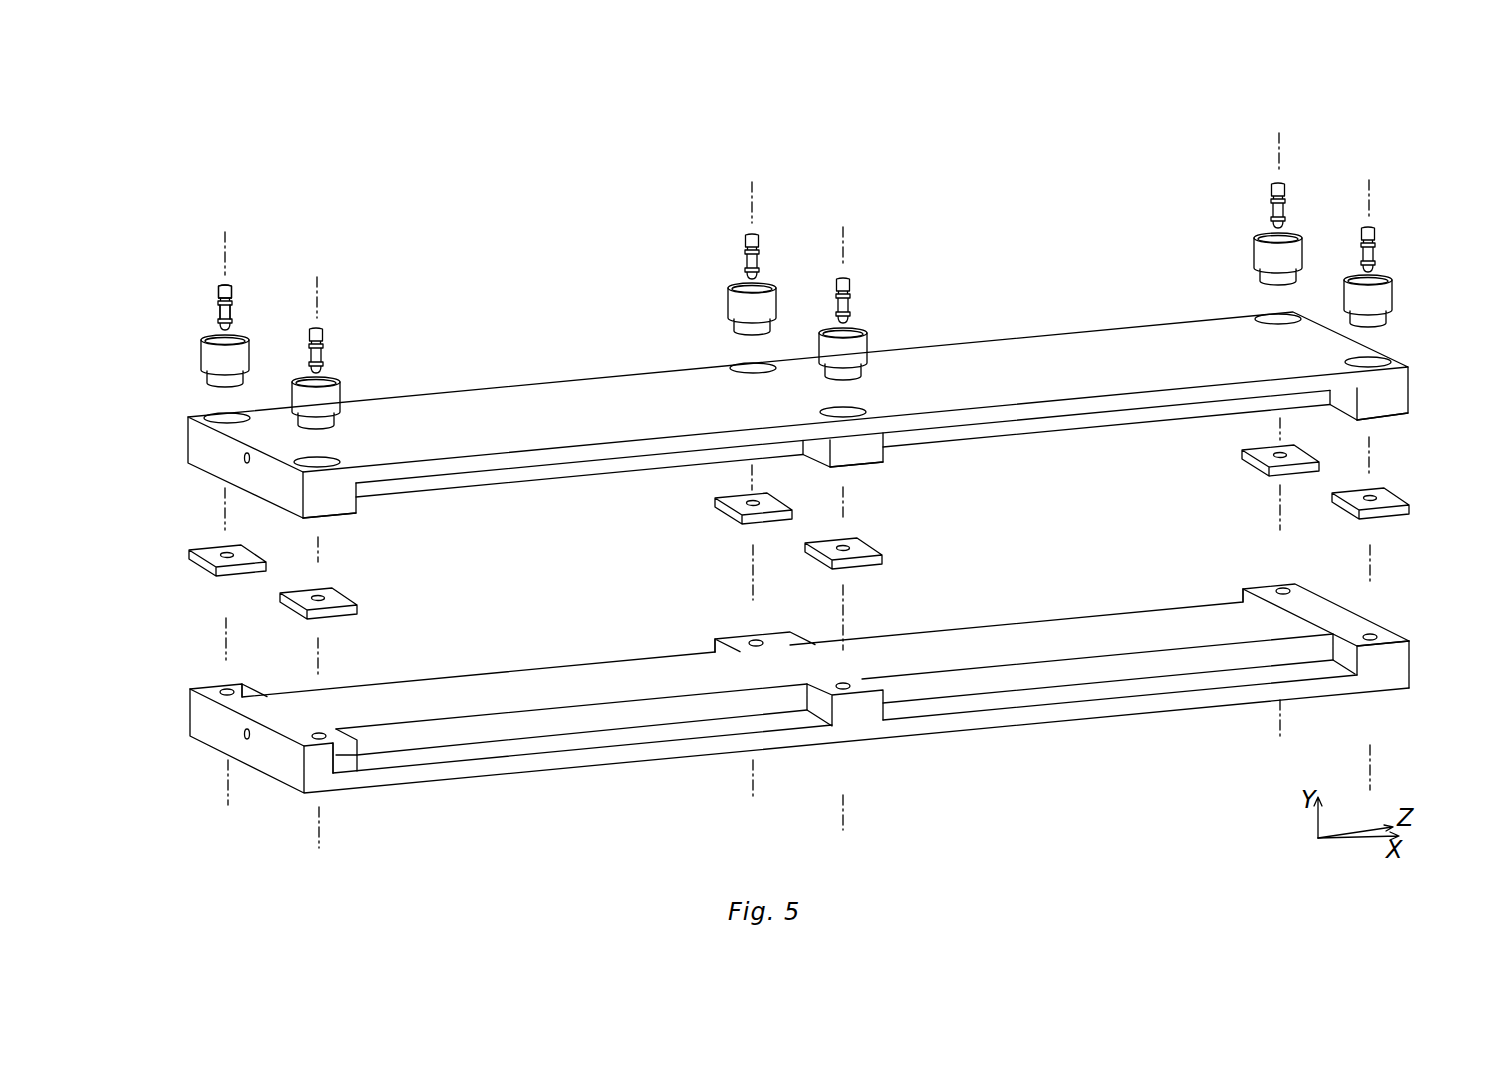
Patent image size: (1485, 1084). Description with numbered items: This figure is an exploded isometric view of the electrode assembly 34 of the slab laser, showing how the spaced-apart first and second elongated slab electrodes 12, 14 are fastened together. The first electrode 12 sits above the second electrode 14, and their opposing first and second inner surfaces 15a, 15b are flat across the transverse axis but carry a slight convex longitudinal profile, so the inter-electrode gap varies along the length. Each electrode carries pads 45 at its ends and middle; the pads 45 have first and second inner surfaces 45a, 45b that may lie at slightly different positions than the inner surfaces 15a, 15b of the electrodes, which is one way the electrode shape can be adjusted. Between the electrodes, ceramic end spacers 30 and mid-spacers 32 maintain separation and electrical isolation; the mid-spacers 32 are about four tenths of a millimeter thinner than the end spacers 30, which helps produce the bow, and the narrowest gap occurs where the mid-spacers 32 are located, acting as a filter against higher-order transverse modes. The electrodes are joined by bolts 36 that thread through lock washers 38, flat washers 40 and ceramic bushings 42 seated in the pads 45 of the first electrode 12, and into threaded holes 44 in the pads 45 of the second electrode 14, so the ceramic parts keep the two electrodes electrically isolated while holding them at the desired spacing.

The first elongated slab electrode 12 is at (338, 497).
The second elongated slab electrode 14 is at (473, 688).
The first inner surface 15a is at (1015, 438).
The second inner surface 15b is at (1018, 642).
The end spacers 30 is at (215, 575).
The mid-spacers 32 is at (730, 516).
The electrode assembly 34 is at (502, 182).
The bolts 36 is at (218, 292).
The lock washers 38 is at (220, 310).
The flat washers 40 is at (217, 332).
The ceramic bushings 42 is at (205, 352).
The threaded holes 44 is at (226, 690).
The pads 45 is at (343, 497).
The first inner surface of pads 45a is at (298, 506).
The second inner surface of pads 45b is at (244, 689).